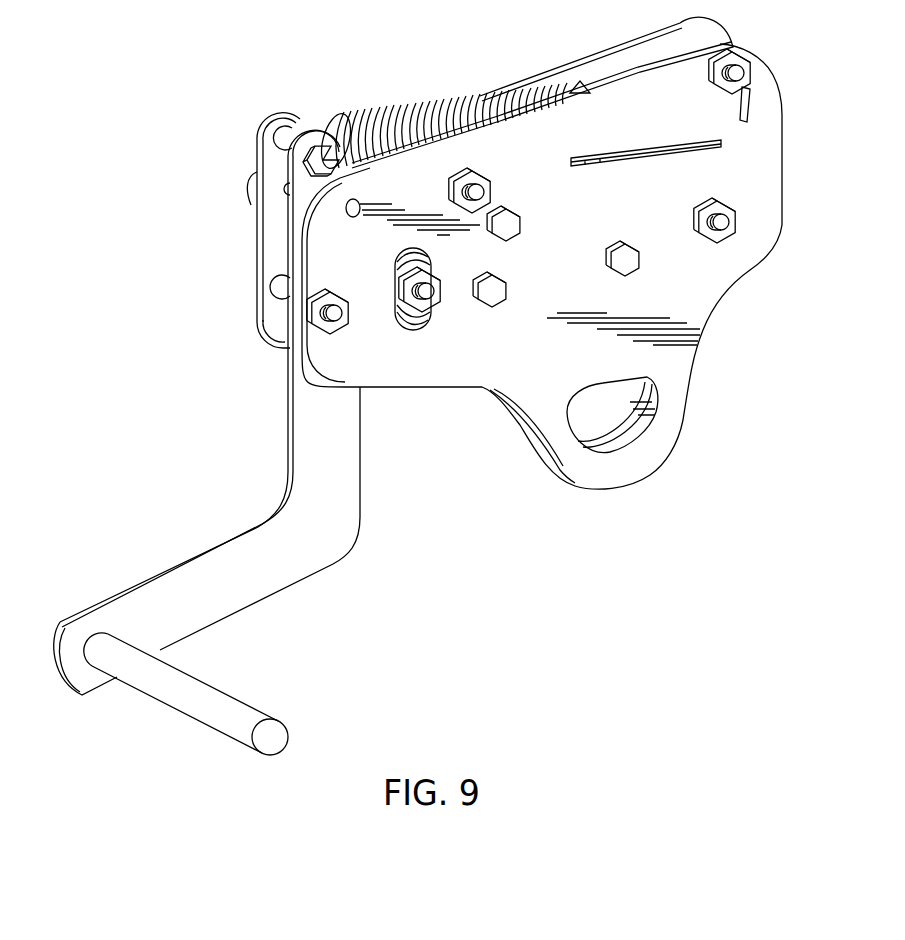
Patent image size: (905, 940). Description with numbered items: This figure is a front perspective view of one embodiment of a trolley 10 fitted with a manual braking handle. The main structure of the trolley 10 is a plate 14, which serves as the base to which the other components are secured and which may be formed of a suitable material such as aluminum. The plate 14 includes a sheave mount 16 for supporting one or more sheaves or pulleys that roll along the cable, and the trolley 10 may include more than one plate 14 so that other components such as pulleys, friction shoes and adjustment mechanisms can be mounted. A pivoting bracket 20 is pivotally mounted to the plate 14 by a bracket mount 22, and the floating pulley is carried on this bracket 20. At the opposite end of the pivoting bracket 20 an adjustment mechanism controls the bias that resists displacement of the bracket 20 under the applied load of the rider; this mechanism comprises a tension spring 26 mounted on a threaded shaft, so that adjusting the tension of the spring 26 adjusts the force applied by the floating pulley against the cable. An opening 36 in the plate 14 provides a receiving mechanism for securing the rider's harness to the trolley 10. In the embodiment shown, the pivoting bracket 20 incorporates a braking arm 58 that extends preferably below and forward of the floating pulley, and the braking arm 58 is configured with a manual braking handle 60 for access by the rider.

The trolley 10 is at (582, 40).
The plate 14 is at (734, 292).
The sheave mount 16 is at (430, 325).
The pivoting bracket 20 is at (287, 212).
The bracket mount 22 is at (327, 330).
The tension spring 26 is at (420, 105).
The opening 36 is at (603, 410).
The braking arm 58 is at (208, 540).
The manual braking handle 60 is at (215, 685).